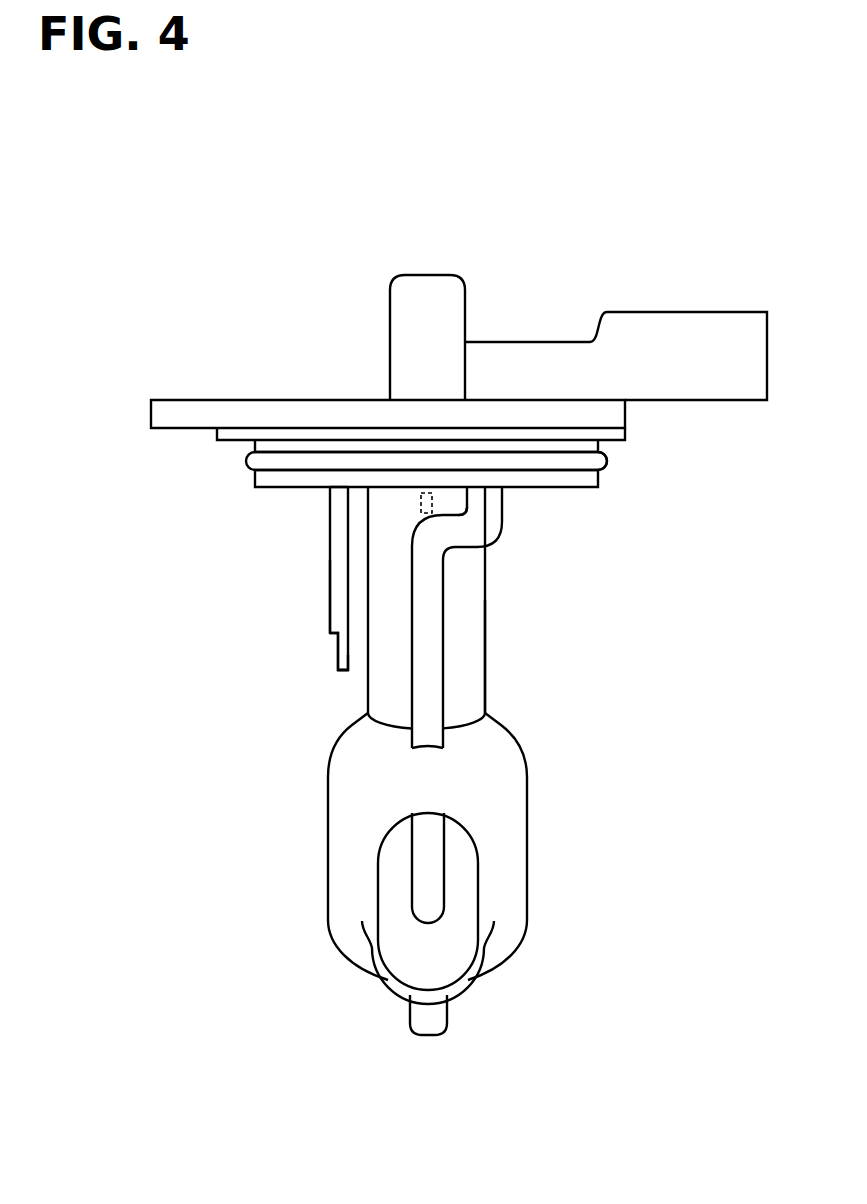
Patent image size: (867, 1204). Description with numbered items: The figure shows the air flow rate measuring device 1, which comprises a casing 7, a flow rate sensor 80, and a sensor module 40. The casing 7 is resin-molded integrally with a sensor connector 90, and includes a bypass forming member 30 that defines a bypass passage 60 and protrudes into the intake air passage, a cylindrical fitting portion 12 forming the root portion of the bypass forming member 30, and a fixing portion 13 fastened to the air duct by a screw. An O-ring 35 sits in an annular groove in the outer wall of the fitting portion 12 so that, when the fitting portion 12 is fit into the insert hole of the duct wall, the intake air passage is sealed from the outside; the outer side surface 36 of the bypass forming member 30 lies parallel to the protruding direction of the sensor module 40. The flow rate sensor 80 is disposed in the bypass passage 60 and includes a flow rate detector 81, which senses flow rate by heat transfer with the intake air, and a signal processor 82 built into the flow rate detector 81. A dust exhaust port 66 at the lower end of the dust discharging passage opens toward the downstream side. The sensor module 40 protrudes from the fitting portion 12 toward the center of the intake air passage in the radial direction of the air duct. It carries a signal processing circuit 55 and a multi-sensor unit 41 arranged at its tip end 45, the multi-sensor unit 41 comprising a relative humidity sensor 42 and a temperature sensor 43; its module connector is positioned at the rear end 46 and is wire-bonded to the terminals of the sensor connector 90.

The air flow rate measuring device 1 is at (181, 221).
The casing 7 is at (186, 892).
The fitting portion 12 is at (265, 473).
The fixing portion 13 is at (340, 410).
The bypass forming member 30 is at (472, 633).
The O-ring 35 is at (607, 461).
The housing outer wall 36 is at (487, 683).
The sensor module 40 is at (333, 570).
The multi-sensor unit 41 is at (150, 627).
The relative humidity sensor 42 is at (346, 645).
The temperature sensor 43 is at (338, 648).
The tip end 45 is at (345, 668).
The rear end 46 is at (343, 495).
The signal processing circuit 55 is at (333, 592).
The bypass passage 60 is at (448, 965).
The dust exhaust port 66 is at (433, 855).
The flow rate sensor 80 is at (558, 507).
The flow rate detector 81 is at (432, 501).
The signal processor 82 is at (455, 513).
The sensor connector 90 is at (690, 358).